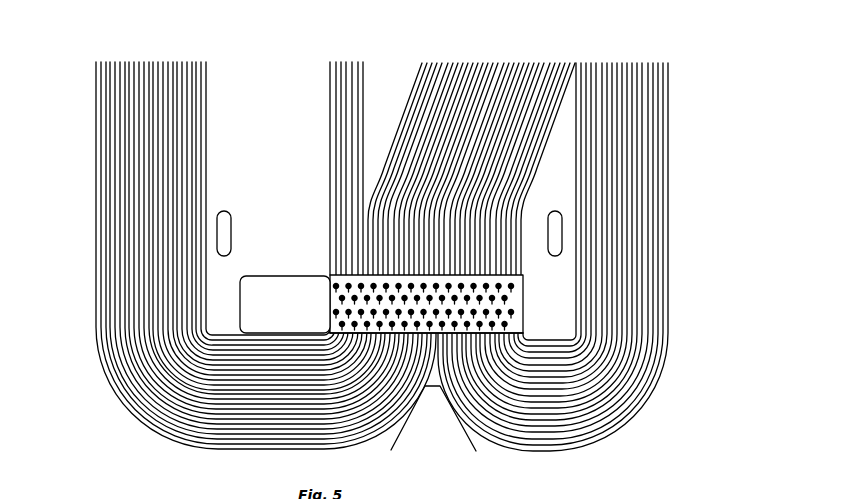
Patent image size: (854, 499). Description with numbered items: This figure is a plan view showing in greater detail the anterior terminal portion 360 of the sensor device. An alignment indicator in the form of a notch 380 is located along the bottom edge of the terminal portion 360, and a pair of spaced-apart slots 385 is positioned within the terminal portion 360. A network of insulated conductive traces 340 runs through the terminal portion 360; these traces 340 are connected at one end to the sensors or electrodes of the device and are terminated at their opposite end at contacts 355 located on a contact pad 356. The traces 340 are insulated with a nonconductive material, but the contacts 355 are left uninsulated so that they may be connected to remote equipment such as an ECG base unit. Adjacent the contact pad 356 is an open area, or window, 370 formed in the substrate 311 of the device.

The substrate 311 is at (420, 235).
The insulated conductive traces 340 is at (162, 50).
The contacts 355 is at (320, 303).
The contact pad 356 is at (316, 262).
The anterior terminal portion 360 is at (674, 155).
The open area or window 370 is at (226, 293).
The notch 380 is at (413, 398).
The spaced-apart slots 385 is at (225, 205).